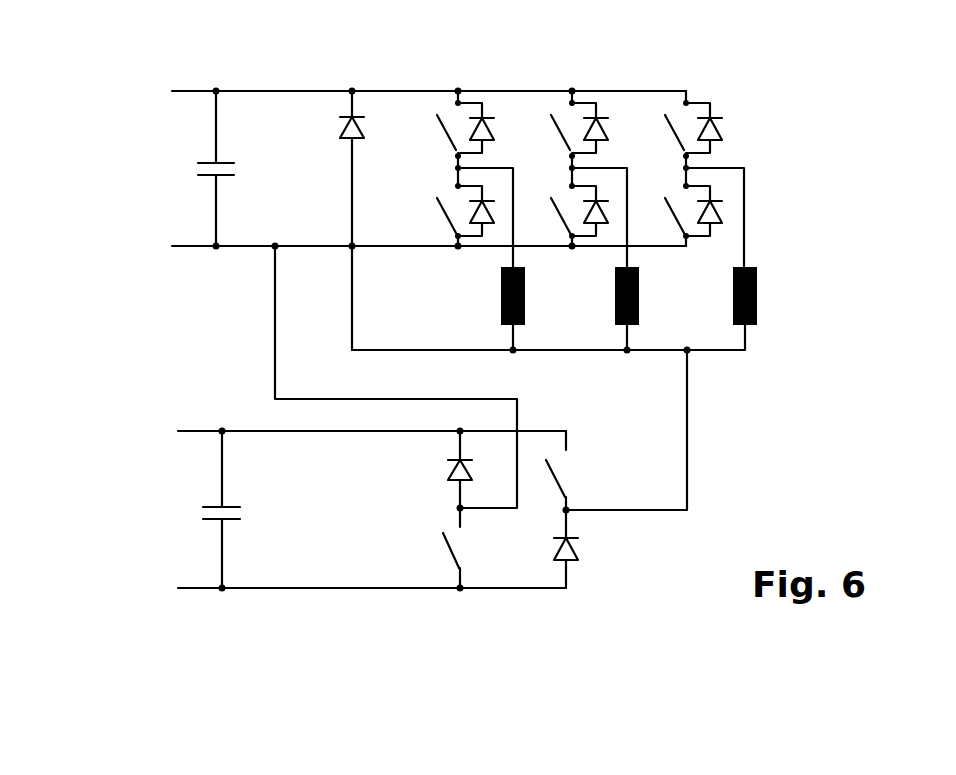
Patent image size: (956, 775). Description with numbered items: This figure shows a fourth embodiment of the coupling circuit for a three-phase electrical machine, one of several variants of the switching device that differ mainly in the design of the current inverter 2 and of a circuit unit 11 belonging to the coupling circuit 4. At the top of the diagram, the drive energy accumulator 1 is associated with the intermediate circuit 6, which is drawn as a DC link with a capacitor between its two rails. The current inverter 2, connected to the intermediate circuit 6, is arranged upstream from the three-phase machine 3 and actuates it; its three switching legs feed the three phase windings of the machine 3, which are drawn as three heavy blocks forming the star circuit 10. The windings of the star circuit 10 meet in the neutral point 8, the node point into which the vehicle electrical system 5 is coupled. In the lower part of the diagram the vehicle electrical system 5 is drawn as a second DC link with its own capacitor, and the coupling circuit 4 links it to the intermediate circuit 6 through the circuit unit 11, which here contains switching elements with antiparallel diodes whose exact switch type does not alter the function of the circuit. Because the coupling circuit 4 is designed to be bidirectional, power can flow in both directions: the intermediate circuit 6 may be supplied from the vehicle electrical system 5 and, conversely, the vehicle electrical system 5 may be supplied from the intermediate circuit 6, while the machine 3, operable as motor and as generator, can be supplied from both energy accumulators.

The drive energy accumulator 1 is at (128, 203).
The current inverter 2 is at (630, 76).
The three-phase electrical machine 3 is at (786, 322).
The coupling circuit 4 is at (245, 376).
The vehicle electrical system 5 is at (140, 508).
The intermediate circuit 6 is at (180, 128).
The neutral point 8 is at (708, 368).
The star circuit 10 is at (745, 342).
The circuit unit 11 is at (524, 605).